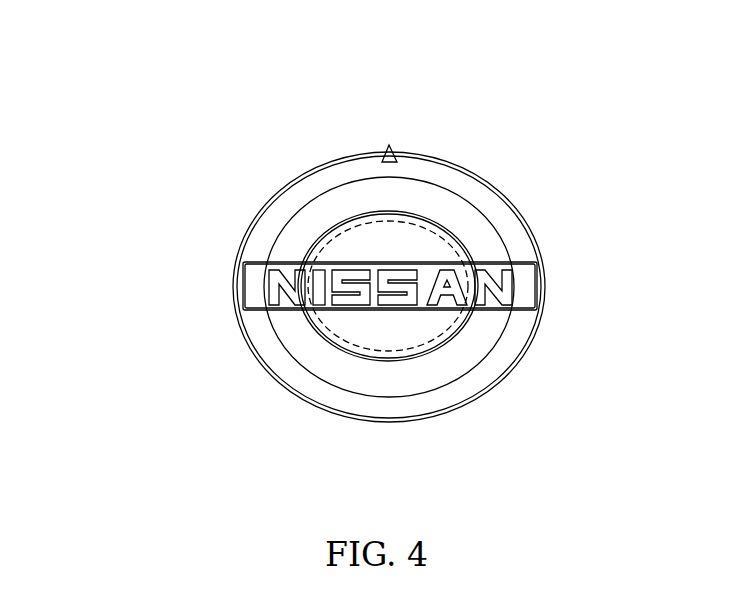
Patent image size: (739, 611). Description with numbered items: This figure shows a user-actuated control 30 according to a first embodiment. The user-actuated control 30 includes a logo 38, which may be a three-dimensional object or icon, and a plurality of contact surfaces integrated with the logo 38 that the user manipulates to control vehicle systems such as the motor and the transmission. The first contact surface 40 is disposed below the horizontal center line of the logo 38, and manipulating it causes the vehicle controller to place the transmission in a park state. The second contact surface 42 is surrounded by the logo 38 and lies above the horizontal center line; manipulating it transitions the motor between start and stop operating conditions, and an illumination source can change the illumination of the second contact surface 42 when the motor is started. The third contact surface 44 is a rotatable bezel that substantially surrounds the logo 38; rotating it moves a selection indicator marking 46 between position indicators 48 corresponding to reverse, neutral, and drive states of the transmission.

The user-actuated control 30 is at (134, 108).
The logo 38 is at (528, 285).
The first contact surface 40 is at (442, 345).
The second contact surface 42 is at (318, 235).
The third contact surface 44 is at (238, 244).
The selection indicator marking 46 is at (400, 148).
The position indicators 48 is at (323, 104).